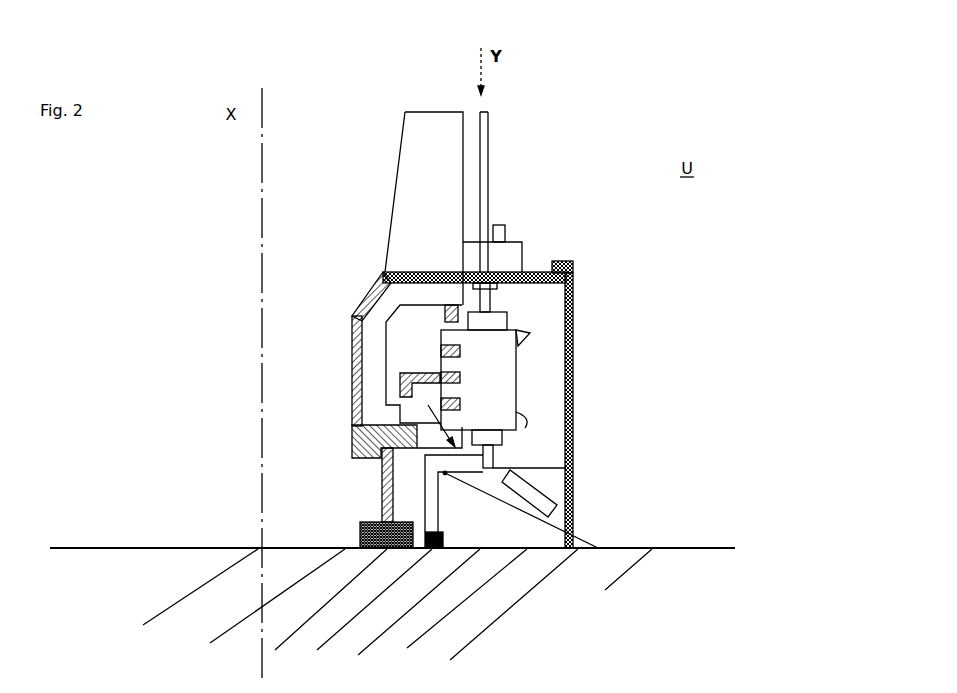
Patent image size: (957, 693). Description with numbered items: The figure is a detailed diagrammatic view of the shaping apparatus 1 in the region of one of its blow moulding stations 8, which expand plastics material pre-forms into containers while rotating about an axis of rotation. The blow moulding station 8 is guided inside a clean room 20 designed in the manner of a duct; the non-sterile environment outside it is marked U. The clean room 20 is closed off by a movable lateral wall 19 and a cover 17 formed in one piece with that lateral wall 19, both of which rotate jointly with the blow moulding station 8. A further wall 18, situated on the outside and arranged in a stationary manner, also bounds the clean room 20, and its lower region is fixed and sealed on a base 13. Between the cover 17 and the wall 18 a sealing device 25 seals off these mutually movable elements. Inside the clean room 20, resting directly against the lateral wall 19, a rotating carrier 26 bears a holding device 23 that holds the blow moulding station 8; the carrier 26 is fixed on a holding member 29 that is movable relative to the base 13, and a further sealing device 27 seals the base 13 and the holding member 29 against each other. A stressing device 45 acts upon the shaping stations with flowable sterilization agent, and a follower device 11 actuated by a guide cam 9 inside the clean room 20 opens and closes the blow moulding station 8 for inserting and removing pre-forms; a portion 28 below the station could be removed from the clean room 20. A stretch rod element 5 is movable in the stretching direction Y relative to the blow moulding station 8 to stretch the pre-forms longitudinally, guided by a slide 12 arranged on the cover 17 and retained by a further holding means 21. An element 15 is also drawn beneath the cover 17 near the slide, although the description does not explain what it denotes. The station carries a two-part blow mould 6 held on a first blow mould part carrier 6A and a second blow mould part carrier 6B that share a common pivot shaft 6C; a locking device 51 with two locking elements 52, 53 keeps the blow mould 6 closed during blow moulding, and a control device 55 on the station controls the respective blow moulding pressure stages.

The shaping apparatus 1 is at (352, 170).
The stretch rod element 5 is at (483, 192).
The two-part blow mould 6 is at (507, 400).
The first blow mould part carrier 6A is at (540, 318).
The second blow mould part carrier 6B is at (507, 362).
The common pivot shaft 6C is at (432, 266).
The blow moulding station 8 is at (515, 368).
The guide cam 9 is at (437, 533).
The follower device 11 is at (562, 535).
The slide 12 is at (512, 246).
The base 13 is at (533, 643).
The shaft 15 is at (487, 290).
The cover 17 is at (436, 303).
The wall 18 is at (515, 338).
The lateral wall 19 is at (352, 362).
The clean room 20 is at (358, 278).
The holding means 21 is at (448, 157).
The holding device 23 is at (415, 370).
The sealing device 25 is at (573, 263).
The carrier 26 is at (372, 410).
The further sealing device 27 is at (360, 537).
The portion 28 is at (500, 458).
The holding member 29 is at (384, 501).
The stressing device 45 is at (382, 496).
The locking device 51 is at (712, 352).
The locking element 52 is at (520, 333).
The locking element 53 is at (523, 415).
The control device 55 is at (506, 226).